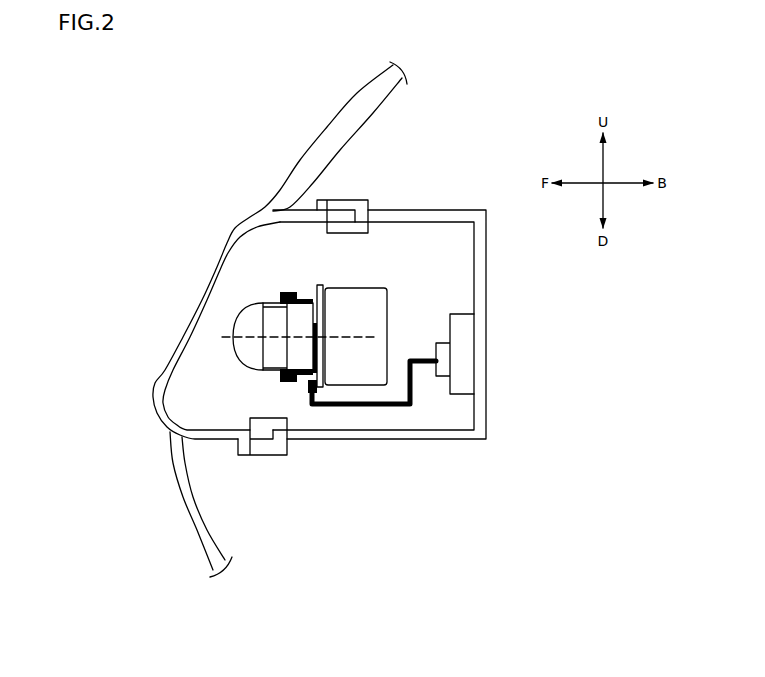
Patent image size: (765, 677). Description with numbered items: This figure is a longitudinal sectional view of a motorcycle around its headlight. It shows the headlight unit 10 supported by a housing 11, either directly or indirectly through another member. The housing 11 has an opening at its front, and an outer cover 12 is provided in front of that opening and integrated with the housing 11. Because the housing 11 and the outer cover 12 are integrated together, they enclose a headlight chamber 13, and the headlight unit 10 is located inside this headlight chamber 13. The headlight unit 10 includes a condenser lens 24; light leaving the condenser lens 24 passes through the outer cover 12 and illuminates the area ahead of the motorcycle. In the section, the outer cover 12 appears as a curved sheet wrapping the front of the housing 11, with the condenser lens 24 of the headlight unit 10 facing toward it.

The headlight unit 10 is at (196, 229).
The housing 11 is at (427, 211).
The outer cover 12 is at (222, 266).
The headlight chamber 13 is at (455, 271).
The condenser lens 24 is at (250, 354).